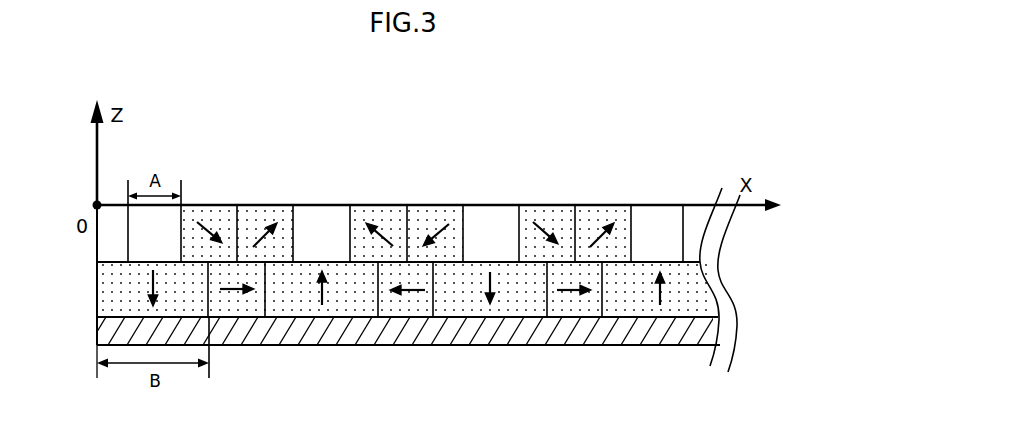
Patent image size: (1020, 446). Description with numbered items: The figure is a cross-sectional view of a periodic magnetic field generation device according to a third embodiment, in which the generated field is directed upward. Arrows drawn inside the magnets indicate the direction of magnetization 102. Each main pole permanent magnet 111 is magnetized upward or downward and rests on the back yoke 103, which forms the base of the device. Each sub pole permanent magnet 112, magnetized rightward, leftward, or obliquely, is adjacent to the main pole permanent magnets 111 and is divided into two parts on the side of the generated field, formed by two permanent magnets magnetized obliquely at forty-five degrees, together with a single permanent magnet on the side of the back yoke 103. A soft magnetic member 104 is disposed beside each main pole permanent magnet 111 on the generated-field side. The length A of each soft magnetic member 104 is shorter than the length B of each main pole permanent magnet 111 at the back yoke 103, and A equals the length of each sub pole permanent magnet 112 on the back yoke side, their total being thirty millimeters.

The direction of magnetization 102 is at (322, 305).
The back yoke 103 is at (623, 328).
The soft magnetic member 104 is at (139, 230).
The main pole permanent magnet 111 is at (177, 278).
The sub pole permanent magnet 112 is at (362, 220).